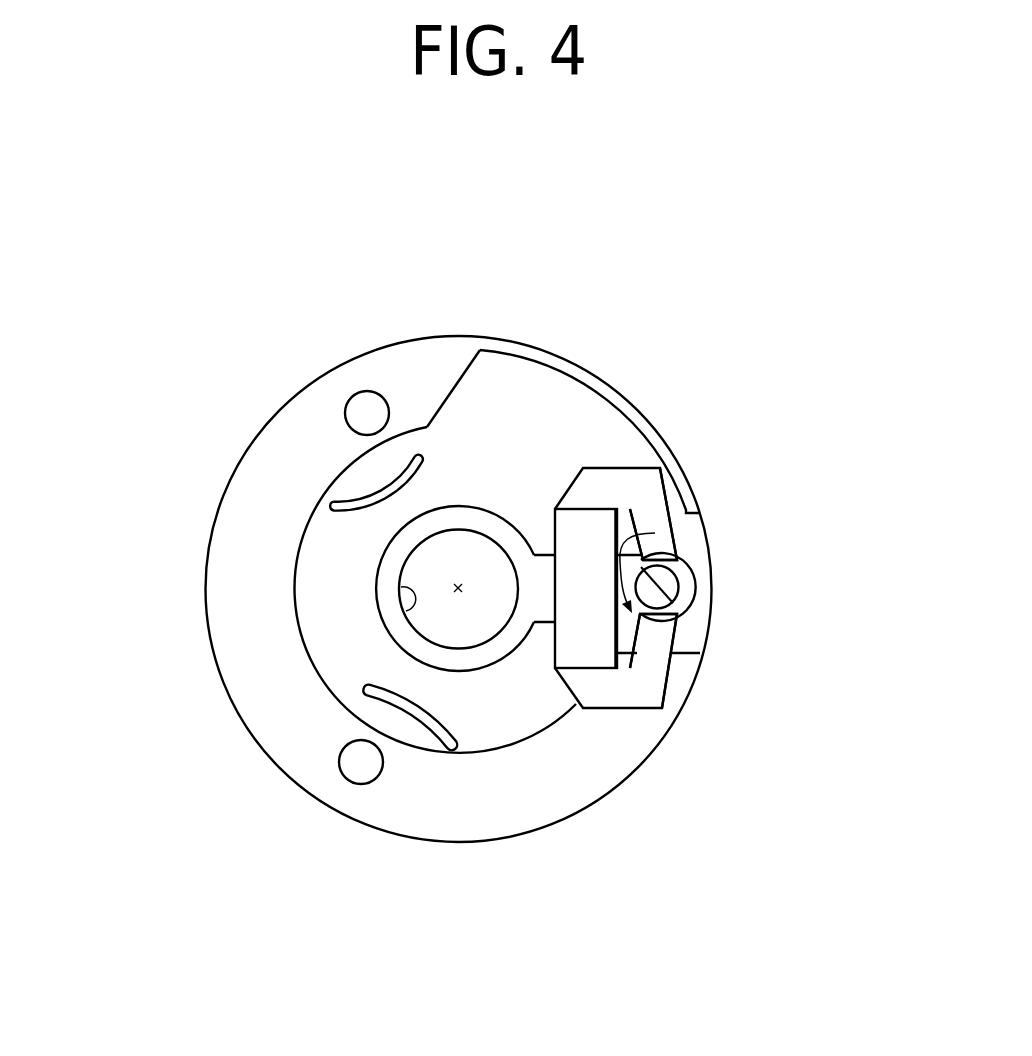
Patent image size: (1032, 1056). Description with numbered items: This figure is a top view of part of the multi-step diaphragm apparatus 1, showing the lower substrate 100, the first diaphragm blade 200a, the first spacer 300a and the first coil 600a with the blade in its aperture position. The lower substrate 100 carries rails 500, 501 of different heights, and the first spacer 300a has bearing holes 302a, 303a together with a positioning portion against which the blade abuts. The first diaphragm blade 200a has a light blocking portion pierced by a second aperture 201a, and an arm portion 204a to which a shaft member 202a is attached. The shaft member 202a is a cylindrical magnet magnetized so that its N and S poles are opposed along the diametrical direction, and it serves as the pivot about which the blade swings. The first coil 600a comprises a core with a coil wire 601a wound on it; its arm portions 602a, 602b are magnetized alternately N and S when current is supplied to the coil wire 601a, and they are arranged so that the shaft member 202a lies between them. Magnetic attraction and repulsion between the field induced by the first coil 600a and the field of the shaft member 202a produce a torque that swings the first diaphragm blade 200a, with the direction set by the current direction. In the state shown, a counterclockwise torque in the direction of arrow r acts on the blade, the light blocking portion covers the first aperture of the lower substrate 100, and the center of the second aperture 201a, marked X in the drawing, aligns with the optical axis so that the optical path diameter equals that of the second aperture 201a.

The multi-step diaphragm apparatus 1 is at (792, 336).
The lower substrate 100 is at (333, 557).
The first diaphragm blade 200a is at (502, 532).
The second aperture 201a is at (403, 608).
The arm portion 204a is at (550, 607).
The first spacer 300a is at (598, 770).
The bearing hole 302a is at (354, 766).
The bearing hole 303a is at (367, 391).
The rail 500 is at (377, 693).
The rail 501 is at (342, 508).
The first coil 600a is at (637, 467).
The coil wire 601a is at (583, 532).
The arm portion of core 602a is at (653, 507).
The arm portion of core 602b is at (647, 680).
The shaft member 202a is at (678, 592).
The arrow indicating torque direction r is at (655, 533).
The rotation axis X is at (458, 593).